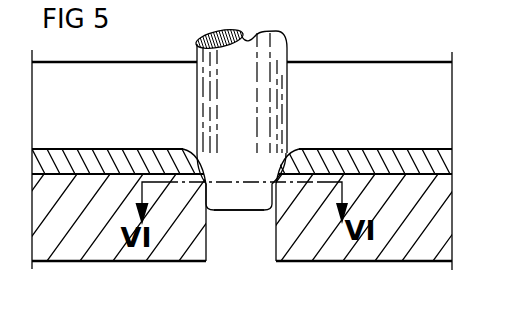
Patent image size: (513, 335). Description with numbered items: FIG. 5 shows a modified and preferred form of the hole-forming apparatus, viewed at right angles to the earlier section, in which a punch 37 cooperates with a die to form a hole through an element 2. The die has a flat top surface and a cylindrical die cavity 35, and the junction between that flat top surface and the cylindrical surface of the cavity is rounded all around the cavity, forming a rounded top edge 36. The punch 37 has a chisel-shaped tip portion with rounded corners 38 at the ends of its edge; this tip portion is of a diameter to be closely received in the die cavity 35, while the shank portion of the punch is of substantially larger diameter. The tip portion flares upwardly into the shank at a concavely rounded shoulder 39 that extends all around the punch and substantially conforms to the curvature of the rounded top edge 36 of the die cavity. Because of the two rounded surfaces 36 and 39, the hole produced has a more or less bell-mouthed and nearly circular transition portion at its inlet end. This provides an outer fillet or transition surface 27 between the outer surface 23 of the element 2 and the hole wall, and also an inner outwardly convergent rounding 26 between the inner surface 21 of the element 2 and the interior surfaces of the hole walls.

The element 2 is at (440, 161).
The inner surface 21 is at (80, 149).
The outer surface 23 is at (380, 175).
The inner outwardly convergent rounding 26 is at (284, 110).
The outer fillet or transition surface 27 is at (280, 183).
The die cavity 35 is at (235, 243).
The rounded top edge of the die cavity 36 is at (298, 150).
The punch 37 is at (210, 60).
The rounded corners 38 is at (272, 195).
The concavely rounded shoulder 39 is at (193, 170).